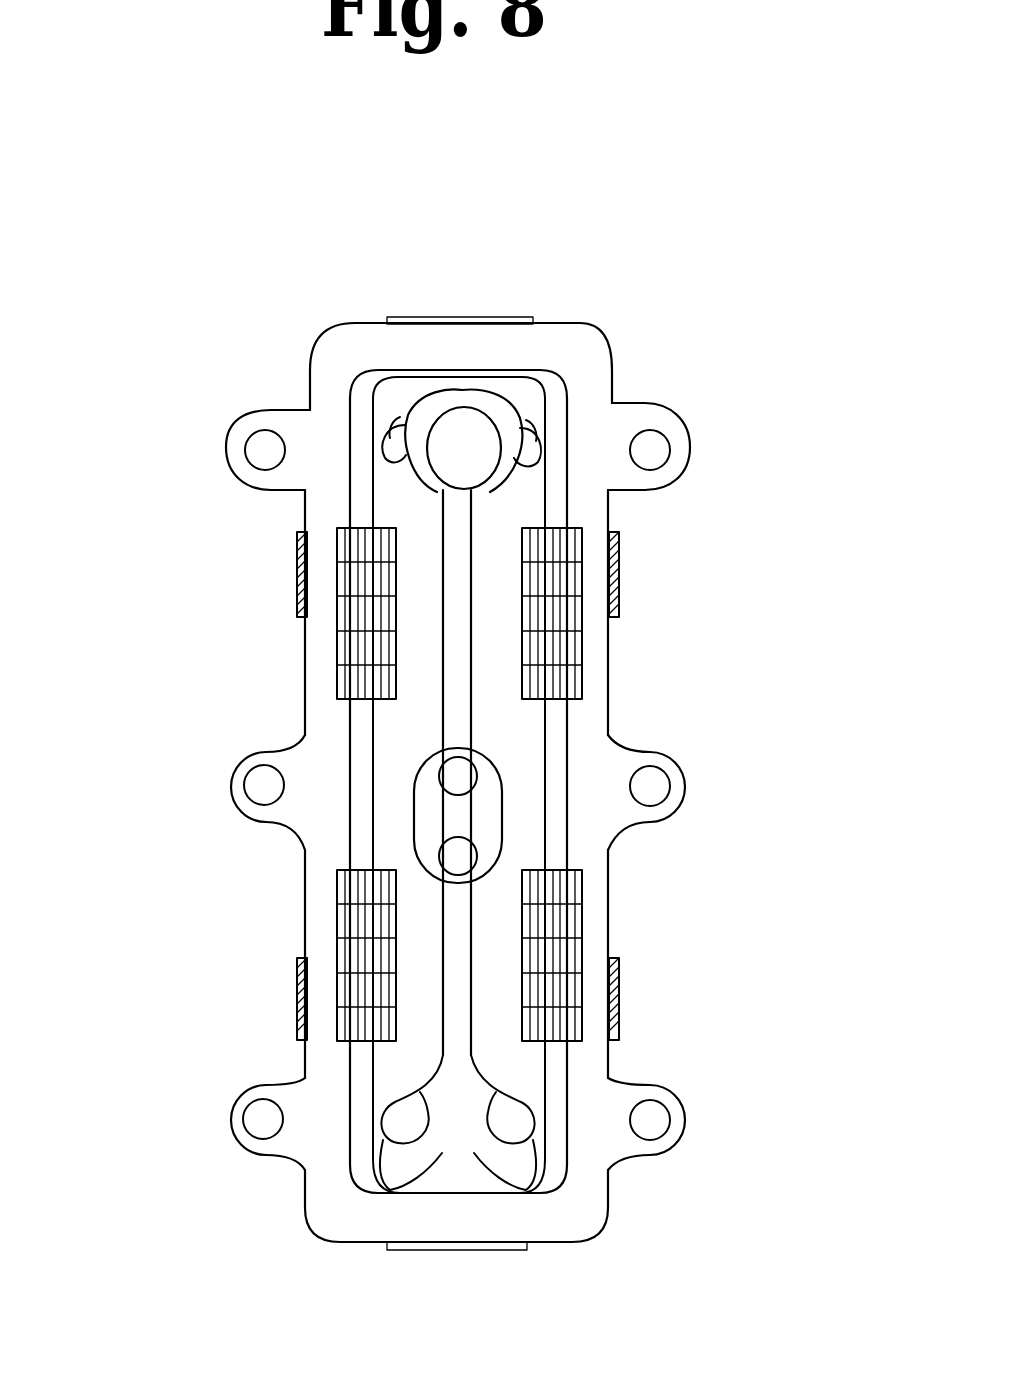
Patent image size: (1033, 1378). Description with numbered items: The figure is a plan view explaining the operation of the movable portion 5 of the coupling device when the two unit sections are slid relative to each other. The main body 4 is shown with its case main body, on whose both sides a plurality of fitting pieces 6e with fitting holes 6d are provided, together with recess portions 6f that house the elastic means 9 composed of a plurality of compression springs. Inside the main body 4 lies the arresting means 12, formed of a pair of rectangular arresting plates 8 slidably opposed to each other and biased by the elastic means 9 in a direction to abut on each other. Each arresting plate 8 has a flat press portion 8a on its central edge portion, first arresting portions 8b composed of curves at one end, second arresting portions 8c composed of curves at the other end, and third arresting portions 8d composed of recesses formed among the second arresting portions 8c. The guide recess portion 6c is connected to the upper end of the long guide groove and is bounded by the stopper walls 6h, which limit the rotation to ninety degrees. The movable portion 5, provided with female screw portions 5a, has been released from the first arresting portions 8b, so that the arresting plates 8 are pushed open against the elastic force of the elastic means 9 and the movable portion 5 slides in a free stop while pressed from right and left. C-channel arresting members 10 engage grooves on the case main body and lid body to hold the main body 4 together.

The main body 4 is at (622, 712).
The movable portion 5 is at (415, 828).
The female screw portion 5a is at (417, 787).
The guide recess portion 6c is at (459, 450).
The fitting hole 6d is at (245, 458).
The fitting piece 6e is at (255, 425).
The recess portion 6f is at (397, 547).
The stopper wall 6h is at (428, 412).
The arresting plate 8 is at (392, 807).
The flat press portion 8a is at (445, 725).
The first arresting portion 8b is at (603, 1287).
The second arresting portion 8c is at (433, 410).
The third arresting portion 8d is at (390, 425).
The elastic means 9 is at (337, 547).
The arresting member 10 is at (472, 318).
The arresting means 12 is at (510, 383).